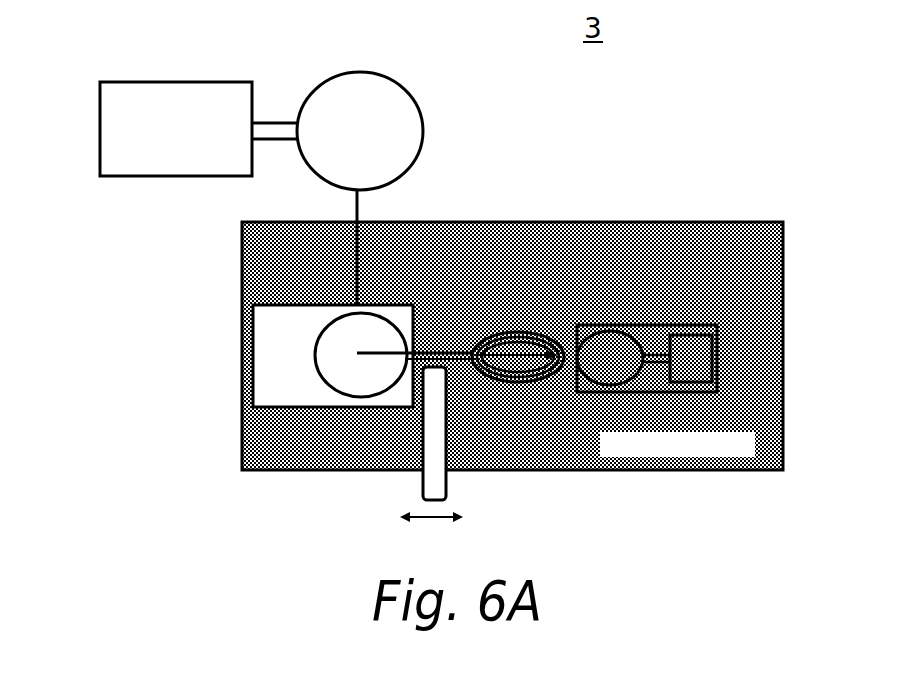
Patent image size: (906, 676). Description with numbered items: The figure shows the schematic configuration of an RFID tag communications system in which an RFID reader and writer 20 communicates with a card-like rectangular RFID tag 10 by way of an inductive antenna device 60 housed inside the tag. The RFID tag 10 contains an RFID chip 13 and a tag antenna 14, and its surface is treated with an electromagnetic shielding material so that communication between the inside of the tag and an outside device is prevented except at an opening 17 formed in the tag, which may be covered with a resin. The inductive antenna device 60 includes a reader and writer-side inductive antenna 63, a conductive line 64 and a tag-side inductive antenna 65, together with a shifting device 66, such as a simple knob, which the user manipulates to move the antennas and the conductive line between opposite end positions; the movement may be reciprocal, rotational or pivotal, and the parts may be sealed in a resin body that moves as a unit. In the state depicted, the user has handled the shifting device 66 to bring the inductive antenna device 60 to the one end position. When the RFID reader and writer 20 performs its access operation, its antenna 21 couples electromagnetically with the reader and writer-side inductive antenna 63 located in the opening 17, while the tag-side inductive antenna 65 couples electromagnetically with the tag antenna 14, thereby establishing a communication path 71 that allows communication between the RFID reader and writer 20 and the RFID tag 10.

The RFID tag 10 is at (664, 487).
The RFID chip 13 is at (690, 335).
The tag antenna 14 is at (610, 332).
The opening 17 is at (292, 407).
The RFID reader and writer 20 is at (178, 82).
The antenna 21 is at (404, 90).
The inductive antenna device 60 is at (462, 262).
The reader and writer-side inductive antenna 63 is at (317, 341).
The conductive line 64 is at (455, 365).
The tag-side inductive antenna 65 is at (518, 332).
The shifting device 66 is at (435, 435).
The communication path 71 is at (357, 215).